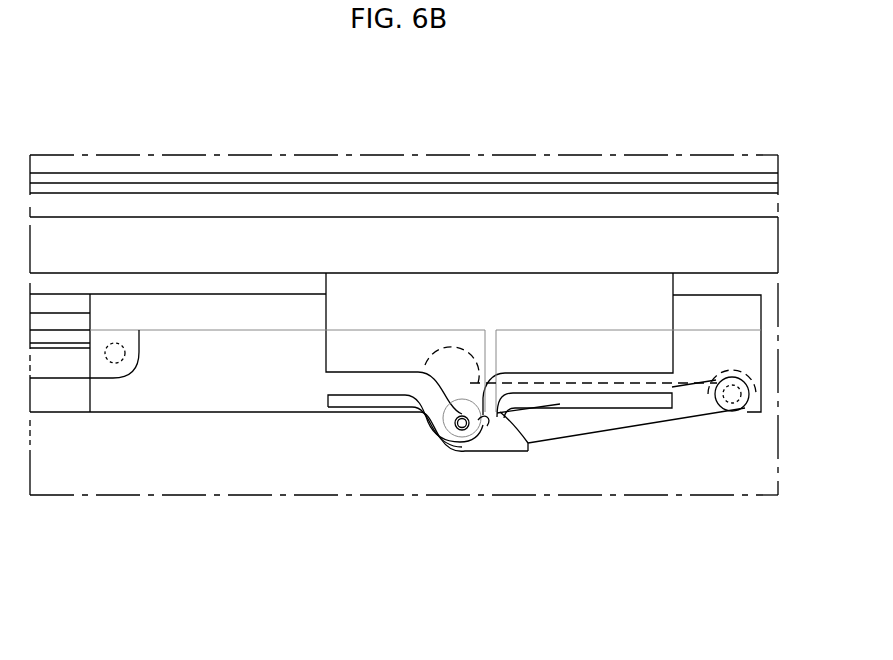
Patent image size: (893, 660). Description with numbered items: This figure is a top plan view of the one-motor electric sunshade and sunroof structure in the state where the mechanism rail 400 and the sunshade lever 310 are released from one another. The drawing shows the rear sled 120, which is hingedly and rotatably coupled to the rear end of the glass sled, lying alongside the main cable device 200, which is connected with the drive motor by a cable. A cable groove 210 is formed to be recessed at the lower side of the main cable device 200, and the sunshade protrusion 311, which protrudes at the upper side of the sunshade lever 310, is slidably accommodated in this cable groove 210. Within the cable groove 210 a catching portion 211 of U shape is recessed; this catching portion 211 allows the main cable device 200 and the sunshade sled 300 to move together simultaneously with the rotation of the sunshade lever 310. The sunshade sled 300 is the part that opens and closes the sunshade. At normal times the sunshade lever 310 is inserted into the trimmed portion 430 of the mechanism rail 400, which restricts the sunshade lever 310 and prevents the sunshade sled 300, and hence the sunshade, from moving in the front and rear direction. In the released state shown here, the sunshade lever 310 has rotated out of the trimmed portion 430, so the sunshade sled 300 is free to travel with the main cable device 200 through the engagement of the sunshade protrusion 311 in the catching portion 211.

The rear sled 120 is at (325, 240).
The main cable device 200 is at (625, 335).
The cable groove 210 is at (558, 383).
The catching portion 211 is at (482, 422).
The sunshade sled 300 is at (195, 400).
The sunshade lever 310 is at (615, 420).
The sunshade protrusion 311 is at (462, 430).
The mechanism rail 400 is at (72, 405).
The trimmed portion 430 is at (362, 390).